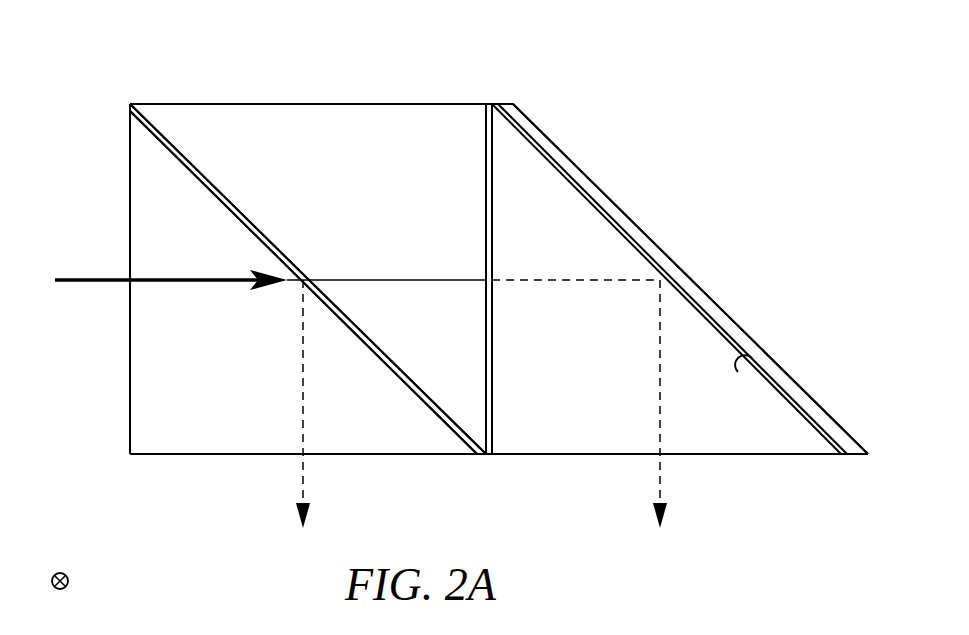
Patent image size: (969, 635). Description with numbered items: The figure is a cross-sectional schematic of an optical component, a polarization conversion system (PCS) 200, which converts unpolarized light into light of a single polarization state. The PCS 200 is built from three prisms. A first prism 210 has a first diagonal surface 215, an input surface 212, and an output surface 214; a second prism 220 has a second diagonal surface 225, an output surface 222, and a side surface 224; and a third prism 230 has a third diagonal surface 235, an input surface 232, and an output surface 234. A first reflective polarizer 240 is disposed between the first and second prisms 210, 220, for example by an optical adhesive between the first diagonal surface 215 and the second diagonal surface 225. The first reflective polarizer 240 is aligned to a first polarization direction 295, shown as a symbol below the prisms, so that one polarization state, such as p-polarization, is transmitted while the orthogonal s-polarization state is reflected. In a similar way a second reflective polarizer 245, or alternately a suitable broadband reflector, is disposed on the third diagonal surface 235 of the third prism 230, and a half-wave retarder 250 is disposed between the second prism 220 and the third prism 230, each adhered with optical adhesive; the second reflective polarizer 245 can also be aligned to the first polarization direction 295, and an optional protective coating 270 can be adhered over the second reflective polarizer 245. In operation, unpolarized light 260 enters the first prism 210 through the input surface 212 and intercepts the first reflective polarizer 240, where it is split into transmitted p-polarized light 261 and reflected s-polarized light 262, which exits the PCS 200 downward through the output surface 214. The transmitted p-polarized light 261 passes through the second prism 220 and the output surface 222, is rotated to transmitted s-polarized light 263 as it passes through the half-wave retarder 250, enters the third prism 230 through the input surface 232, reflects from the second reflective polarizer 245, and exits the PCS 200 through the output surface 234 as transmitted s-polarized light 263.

The polarization conversion system 200 is at (105, 48).
The first prism 210 is at (140, 444).
The input surface 212 is at (128, 365).
The output surface 214 is at (190, 460).
The first diagonal surface 215 is at (162, 148).
The second prism 220 is at (419, 122).
The output surface 222 is at (486, 186).
The side surface 224 is at (321, 104).
The second diagonal surface 225 is at (192, 162).
The third prism 230 is at (793, 460).
The input surface 232 is at (493, 420).
The output surface 234 is at (585, 460).
The third diagonal surface 235 is at (740, 373).
The first reflective polarizer 240 is at (153, 123).
The second reflective polarizer 245 is at (560, 175).
The half-wave retarder 250 is at (488, 146).
The unpolarized light 260 is at (75, 277).
The transmitted p-polarized light 261 is at (362, 278).
The reflected s-polarized light 262 is at (303, 492).
The transmitted s-polarized light 263 is at (660, 492).
The protective coating 270 is at (637, 230).
The first polarization direction 295 is at (69, 578).